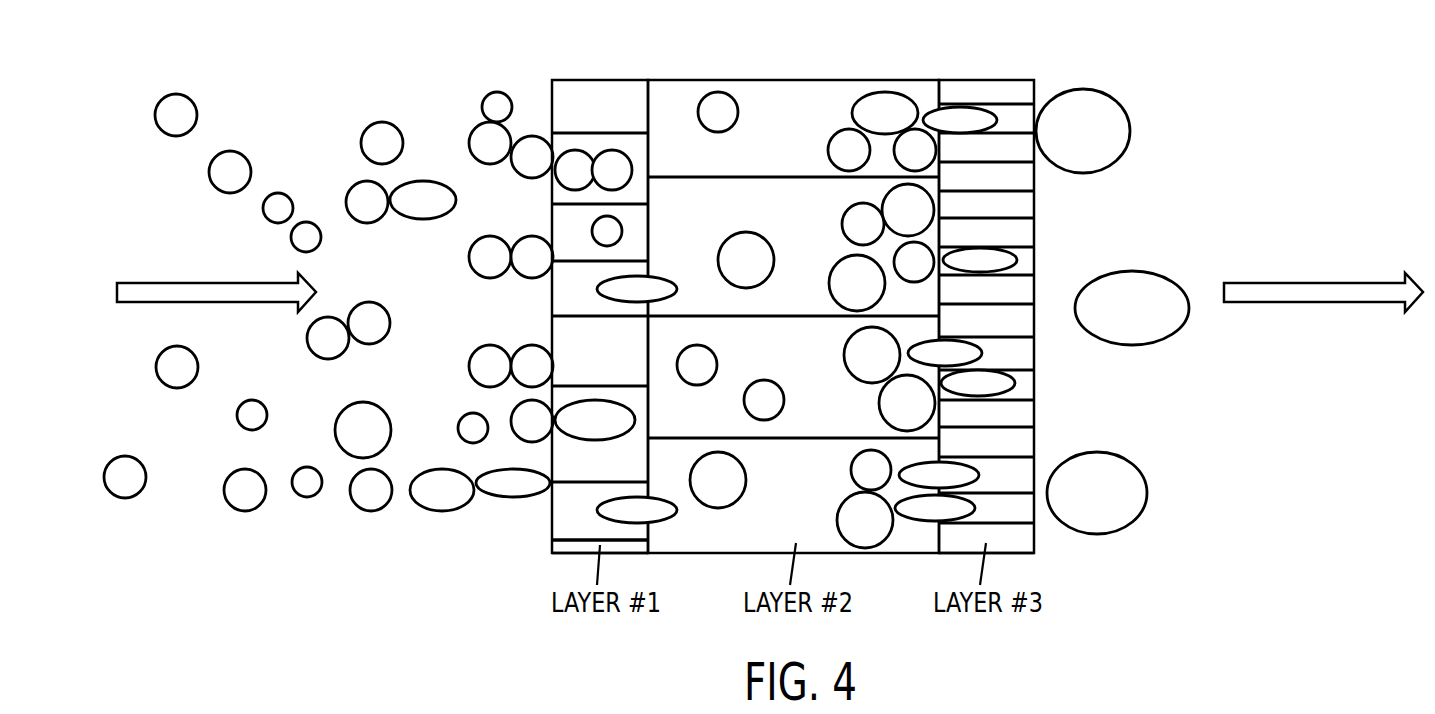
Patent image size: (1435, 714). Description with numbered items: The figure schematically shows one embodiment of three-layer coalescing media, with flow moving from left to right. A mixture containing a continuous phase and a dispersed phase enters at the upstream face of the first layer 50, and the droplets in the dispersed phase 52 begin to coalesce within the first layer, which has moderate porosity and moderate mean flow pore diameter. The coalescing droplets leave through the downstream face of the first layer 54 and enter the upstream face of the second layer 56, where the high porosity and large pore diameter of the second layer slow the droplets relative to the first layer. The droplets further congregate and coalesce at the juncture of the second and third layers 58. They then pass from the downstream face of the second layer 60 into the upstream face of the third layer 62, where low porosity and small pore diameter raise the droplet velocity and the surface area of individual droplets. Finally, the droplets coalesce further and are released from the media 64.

The upstream face of Layer #1 50 is at (548, 517).
The droplets in the dispersed phase 52 is at (365, 512).
The downstream face of Layer #1 54 is at (650, 95).
The upstream face of Layer #2 56 is at (647, 550).
The juncture of Layer #2 and Layer #3 58 is at (940, 80).
The downstream face of Layer #2 60 is at (937, 540).
The upstream face of Layer #3 62 is at (942, 95).
The media 64 is at (1122, 453).